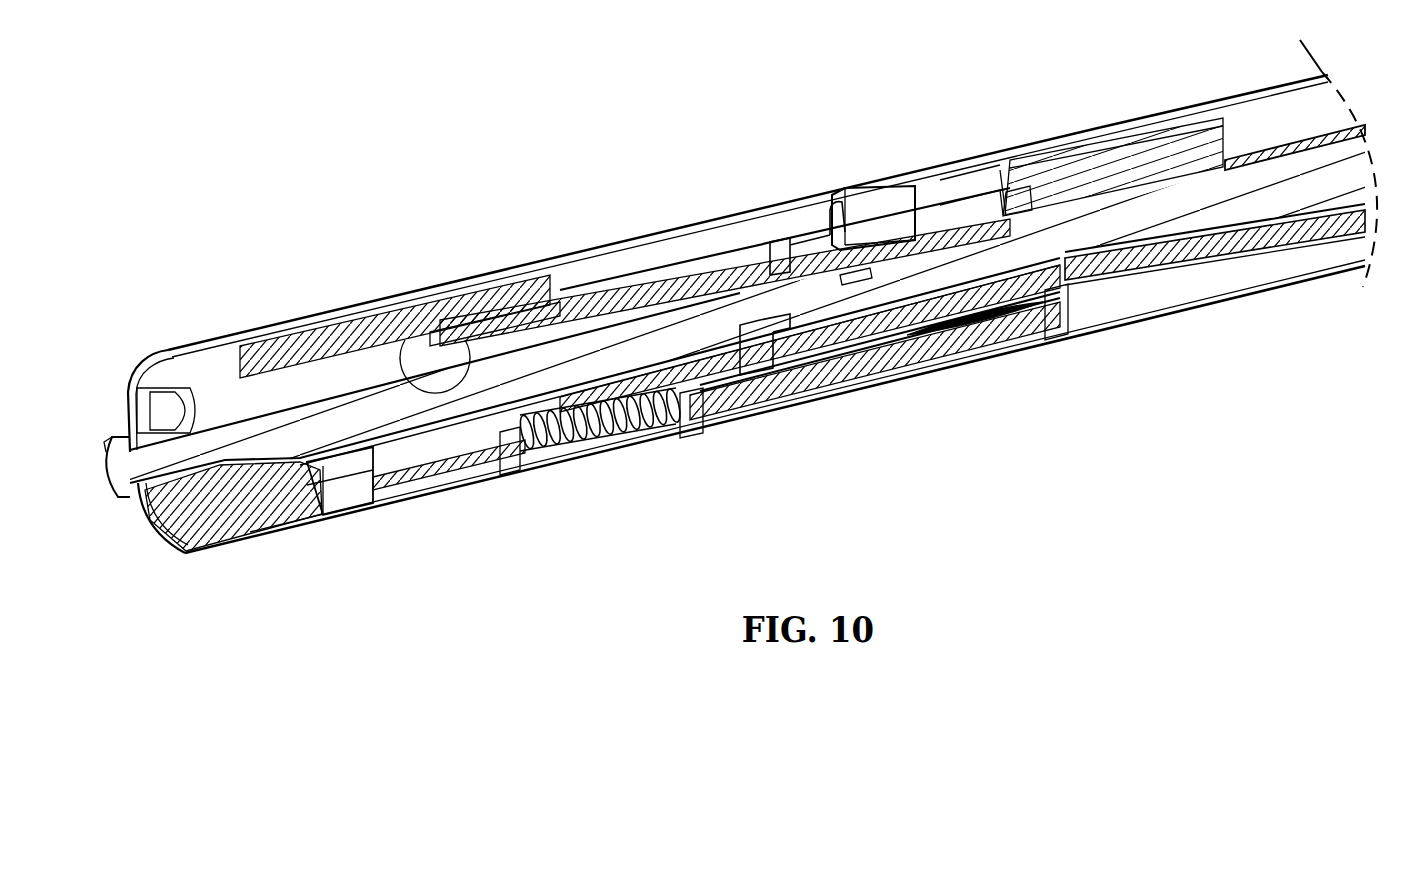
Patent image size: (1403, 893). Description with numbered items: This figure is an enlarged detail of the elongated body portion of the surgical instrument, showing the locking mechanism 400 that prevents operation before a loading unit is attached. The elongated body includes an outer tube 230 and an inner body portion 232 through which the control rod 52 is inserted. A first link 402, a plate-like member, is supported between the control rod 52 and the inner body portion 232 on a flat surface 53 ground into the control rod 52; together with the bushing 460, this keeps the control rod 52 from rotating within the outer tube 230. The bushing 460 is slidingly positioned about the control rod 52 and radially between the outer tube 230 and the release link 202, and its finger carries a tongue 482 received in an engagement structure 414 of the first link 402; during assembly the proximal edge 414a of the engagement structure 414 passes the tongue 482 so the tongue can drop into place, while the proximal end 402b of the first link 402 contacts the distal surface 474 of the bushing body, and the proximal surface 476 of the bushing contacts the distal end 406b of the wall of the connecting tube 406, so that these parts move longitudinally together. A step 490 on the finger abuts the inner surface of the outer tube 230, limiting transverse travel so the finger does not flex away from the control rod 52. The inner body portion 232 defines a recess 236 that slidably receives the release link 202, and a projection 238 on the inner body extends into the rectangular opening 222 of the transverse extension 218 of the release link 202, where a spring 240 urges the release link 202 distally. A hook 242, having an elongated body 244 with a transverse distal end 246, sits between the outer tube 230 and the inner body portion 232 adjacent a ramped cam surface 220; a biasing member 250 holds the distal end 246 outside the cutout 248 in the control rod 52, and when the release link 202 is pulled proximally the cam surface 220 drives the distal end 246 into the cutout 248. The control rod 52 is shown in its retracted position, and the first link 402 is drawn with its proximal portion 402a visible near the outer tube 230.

The locking mechanism 400 is at (495, 92).
The control rod 52 is at (250, 435).
The flat surface 53 is at (407, 365).
The release link 202 is at (1280, 240).
The transverse extension 218 is at (345, 512).
The ramped cam surface 220 is at (727, 413).
The rectangular opening 222 is at (525, 455).
The outer tube 230 is at (533, 268).
The inner body portion 232 is at (223, 533).
The recess 236 is at (432, 487).
The projection 238 is at (655, 435).
The spring 240 is at (580, 455).
The hook 242 is at (800, 385).
The elongated body 244 is at (927, 353).
The transverse distal end 246 is at (762, 420).
The cutout 248 is at (748, 335).
The biasing member 250 is at (1010, 323).
The first link 402 is at (625, 300).
The housing proximal portion 402a is at (440, 335).
The proximal end 402b is at (1005, 200).
The connecting tube 406 is at (1322, 135).
The distal end 406b is at (1255, 152).
The engagement structure 414 is at (774, 255).
The proximal edge 414a is at (853, 265).
The bushing 460 is at (1030, 215).
The distal surface 474 is at (1078, 190).
The proximal surface 476 is at (1232, 135).
The tongue 482 is at (812, 272).
The step 490 is at (893, 200).